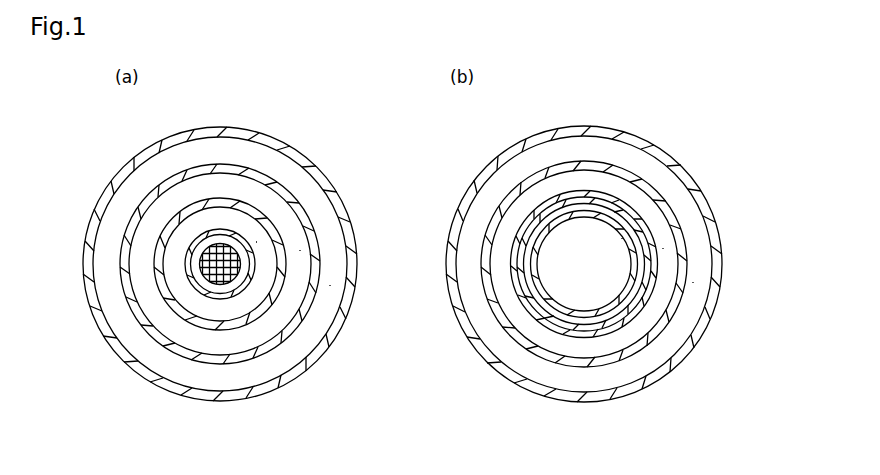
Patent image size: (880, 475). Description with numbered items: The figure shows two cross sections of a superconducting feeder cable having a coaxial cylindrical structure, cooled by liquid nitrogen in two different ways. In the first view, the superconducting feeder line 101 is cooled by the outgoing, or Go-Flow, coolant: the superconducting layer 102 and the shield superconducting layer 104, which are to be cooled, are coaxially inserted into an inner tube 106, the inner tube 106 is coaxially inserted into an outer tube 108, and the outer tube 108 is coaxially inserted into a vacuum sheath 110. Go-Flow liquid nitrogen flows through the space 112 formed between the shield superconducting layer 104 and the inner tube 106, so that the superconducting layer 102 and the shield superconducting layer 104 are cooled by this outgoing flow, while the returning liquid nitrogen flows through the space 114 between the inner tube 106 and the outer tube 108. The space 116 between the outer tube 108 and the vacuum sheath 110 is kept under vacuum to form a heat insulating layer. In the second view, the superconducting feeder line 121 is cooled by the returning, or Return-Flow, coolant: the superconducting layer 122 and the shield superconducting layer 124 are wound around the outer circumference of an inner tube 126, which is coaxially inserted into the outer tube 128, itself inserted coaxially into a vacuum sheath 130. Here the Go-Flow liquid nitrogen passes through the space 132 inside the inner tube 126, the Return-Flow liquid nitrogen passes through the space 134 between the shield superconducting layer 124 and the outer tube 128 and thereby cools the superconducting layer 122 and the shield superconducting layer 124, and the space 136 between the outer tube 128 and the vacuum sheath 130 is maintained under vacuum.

In FIG. 1A, the superconducting feeder line 101 is at (312, 139).
In FIG. 1A, the superconducting layer 102 is at (216, 284).
In FIG. 1A, the shield superconducting layer 104 is at (232, 296).
In FIG. 1A, the inner tube 106 is at (262, 312).
In FIG. 1A, the outer tube 108 is at (297, 323).
In FIG. 1A, the vacuum sheath 110 is at (333, 337).
In FIG. 1A, the space 112 is at (258, 242).
In FIG. 1A, the space 114 is at (300, 250).
In FIG. 1A, the space 116 is at (330, 285).
In FIG. 1B, the superconducting feeder line 121 is at (676, 137).
In FIG. 1B, the superconducting layer 122 is at (603, 312).
In FIG. 1B, the shield superconducting layer 124 is at (572, 333).
In FIG. 1B, the inner tube 126 is at (628, 314).
In FIG. 1B, the outer tube 128 is at (660, 322).
In FIG. 1B, the vacuum sheath 130 is at (698, 333).
In FIG. 1B, the space 132 is at (622, 238).
In FIG. 1B, the space 134 is at (663, 248).
In FIG. 1B, the space 136 is at (693, 282).